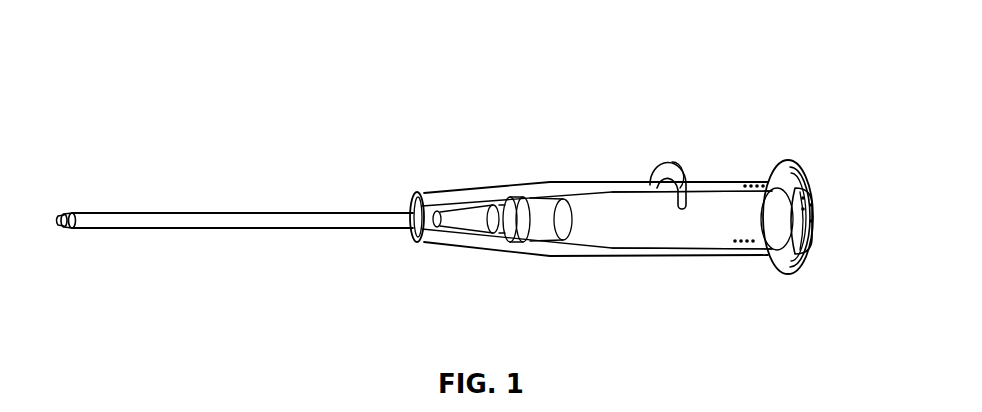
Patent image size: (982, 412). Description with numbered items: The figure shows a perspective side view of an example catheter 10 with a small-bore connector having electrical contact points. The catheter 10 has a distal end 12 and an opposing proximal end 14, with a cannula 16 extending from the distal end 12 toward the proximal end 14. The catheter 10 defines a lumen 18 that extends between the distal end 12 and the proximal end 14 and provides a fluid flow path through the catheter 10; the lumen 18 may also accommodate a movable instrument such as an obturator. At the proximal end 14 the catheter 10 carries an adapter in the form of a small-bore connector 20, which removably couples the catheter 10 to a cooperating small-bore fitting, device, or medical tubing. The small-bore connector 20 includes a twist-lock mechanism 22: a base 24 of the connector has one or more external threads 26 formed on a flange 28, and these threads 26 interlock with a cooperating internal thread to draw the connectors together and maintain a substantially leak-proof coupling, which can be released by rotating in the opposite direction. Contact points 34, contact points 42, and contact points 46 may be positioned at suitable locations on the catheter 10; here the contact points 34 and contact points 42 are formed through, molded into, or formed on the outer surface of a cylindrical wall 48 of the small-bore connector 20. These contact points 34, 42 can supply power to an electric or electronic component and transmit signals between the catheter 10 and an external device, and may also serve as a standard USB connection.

The catheter 10 is at (108, 85).
The distal end 12 is at (111, 252).
The proximal end 14 is at (692, 292).
The cannula 16 is at (245, 212).
The lumen 18 is at (158, 218).
The small-bore connector 20 is at (583, 163).
The twist-lock mechanism 22 is at (821, 158).
The base 24 is at (710, 183).
The external threads 26 is at (820, 190).
The flange 28 is at (810, 262).
The contact points 34 is at (748, 260).
The contact points 42 is at (752, 166).
The contact points 46 is at (828, 225).
The cylindrical wall 48 is at (662, 243).